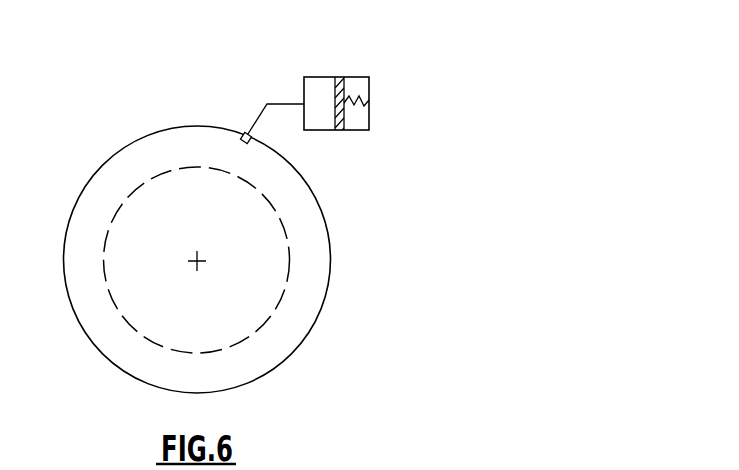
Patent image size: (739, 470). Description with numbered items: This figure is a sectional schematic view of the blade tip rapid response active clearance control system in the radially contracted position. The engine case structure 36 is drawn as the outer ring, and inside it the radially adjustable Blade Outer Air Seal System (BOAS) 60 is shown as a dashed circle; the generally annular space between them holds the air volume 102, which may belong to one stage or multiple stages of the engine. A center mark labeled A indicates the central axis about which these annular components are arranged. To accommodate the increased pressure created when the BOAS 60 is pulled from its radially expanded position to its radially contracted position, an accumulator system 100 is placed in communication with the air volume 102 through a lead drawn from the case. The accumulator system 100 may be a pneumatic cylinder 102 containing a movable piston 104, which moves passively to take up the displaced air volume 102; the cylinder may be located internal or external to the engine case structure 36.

The engine case structure 36 is at (165, 130).
The radially adjustable Blade Outer Air Seal System (BOAS) 60 is at (120, 207).
The rotation axis A is at (198, 263).
The accumulator system 100 is at (344, 76).
The air volume 102 is at (317, 77).
The movable piston 104 is at (338, 120).